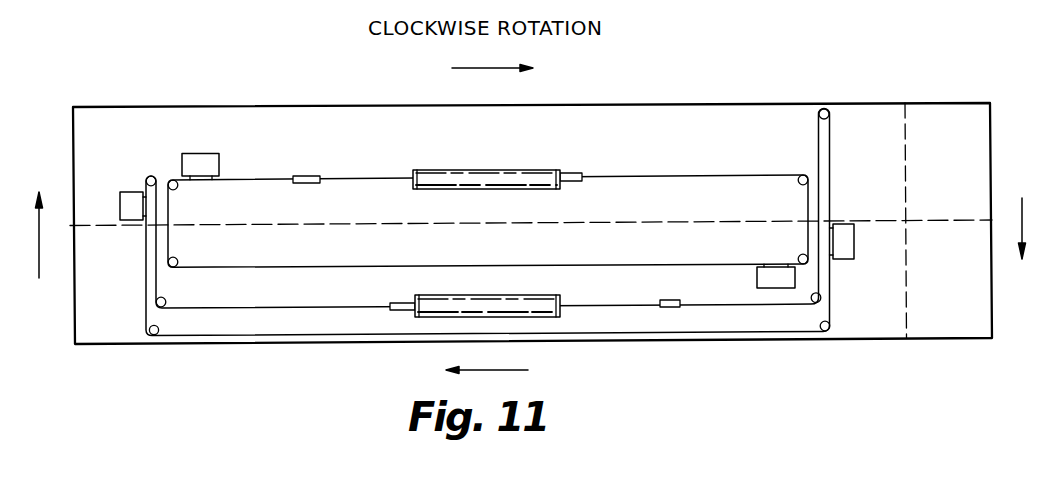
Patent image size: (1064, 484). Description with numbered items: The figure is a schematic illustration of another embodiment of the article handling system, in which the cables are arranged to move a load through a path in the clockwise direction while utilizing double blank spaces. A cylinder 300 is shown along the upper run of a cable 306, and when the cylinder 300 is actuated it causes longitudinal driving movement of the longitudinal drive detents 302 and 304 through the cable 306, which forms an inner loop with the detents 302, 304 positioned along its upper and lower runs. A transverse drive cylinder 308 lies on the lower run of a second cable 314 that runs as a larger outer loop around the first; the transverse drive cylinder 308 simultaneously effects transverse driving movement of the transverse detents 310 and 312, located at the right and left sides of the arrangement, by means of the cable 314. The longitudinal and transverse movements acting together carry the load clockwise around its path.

The cylinder 300 is at (480, 172).
The longitudinal drive detent 302 is at (219, 165).
The longitudinal drive detent 304 is at (757, 277).
The cable 306 is at (694, 176).
The transverse drive cylinder 308 is at (493, 292).
The transverse detent 310 is at (844, 225).
The transverse detent 312 is at (128, 192).
The cable 314 is at (830, 301).